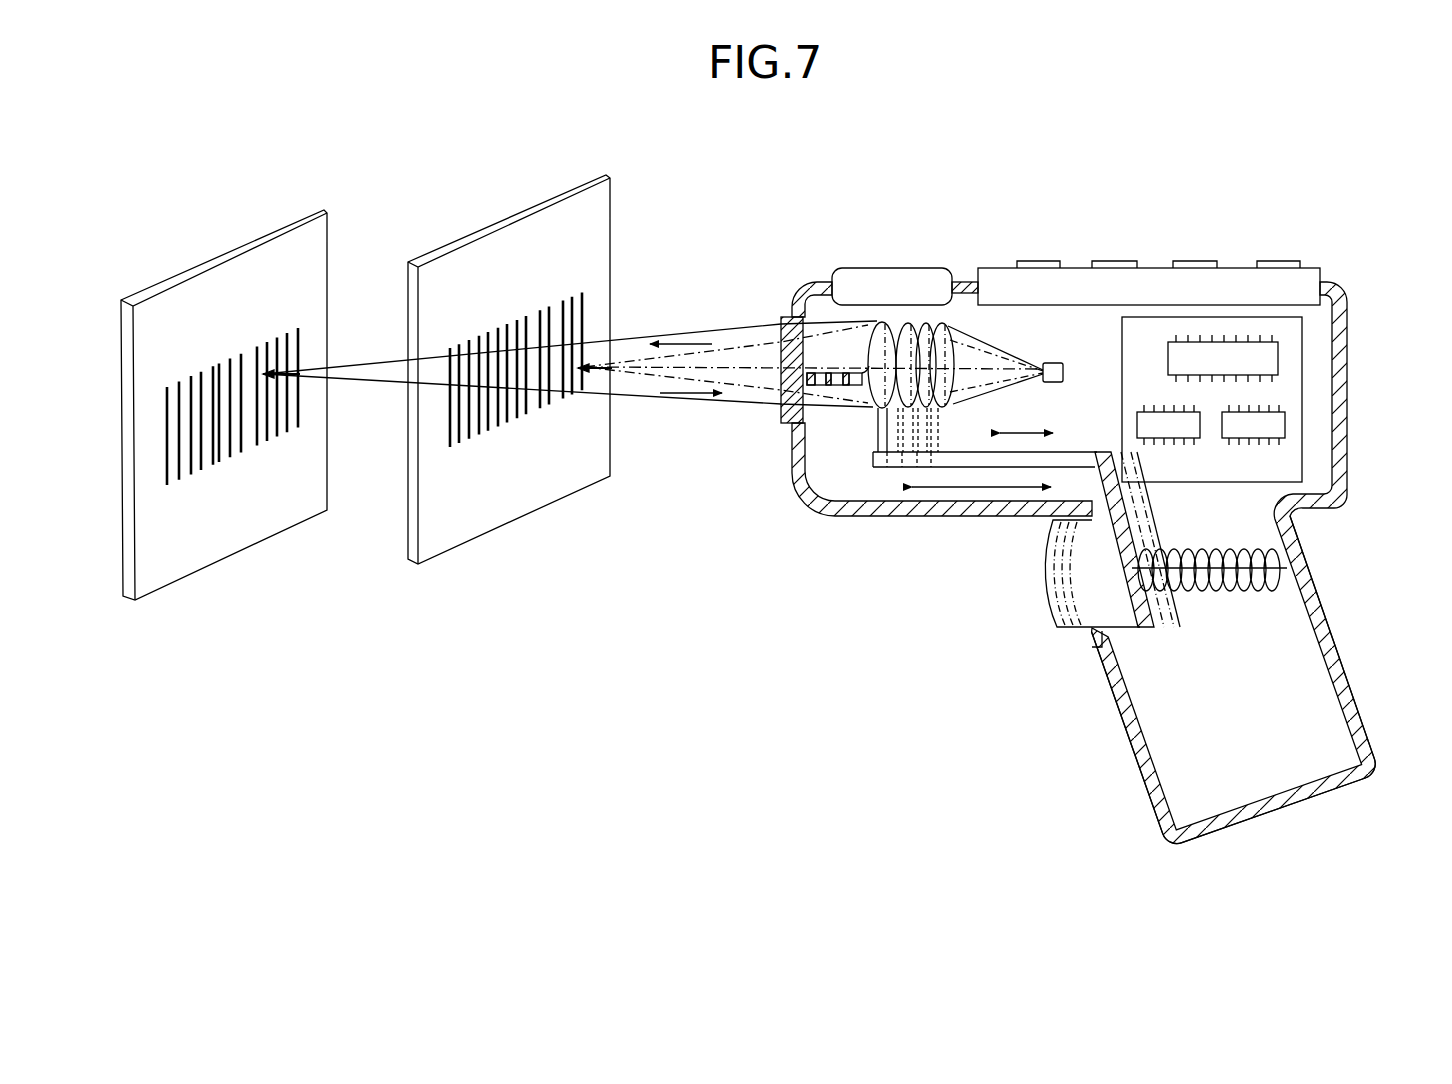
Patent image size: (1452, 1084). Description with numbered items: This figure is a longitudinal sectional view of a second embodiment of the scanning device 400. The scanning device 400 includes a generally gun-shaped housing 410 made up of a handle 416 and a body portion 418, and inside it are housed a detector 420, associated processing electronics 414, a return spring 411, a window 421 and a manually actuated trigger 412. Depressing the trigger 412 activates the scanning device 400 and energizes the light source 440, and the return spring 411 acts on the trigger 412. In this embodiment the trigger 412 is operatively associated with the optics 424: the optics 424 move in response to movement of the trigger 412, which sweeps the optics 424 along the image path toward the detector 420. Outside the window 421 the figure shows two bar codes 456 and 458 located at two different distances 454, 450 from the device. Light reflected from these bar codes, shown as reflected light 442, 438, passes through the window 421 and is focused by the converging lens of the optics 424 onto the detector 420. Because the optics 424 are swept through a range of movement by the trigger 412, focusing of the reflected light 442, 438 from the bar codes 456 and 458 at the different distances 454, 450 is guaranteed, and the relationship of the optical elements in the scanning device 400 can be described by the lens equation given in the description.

The scanning device 400 is at (960, 636).
The housing 410 is at (1354, 390).
The return spring 411 is at (1282, 538).
The trigger 412 is at (1053, 577).
The processing electronics 414 is at (1233, 343).
The handle 416 is at (1122, 713).
The body portion 418 is at (1348, 322).
The detector 420 is at (1052, 362).
The window 421 is at (781, 316).
The optics 424 is at (978, 400).
The reflected light 438 is at (648, 378).
The light source 440 is at (822, 386).
The reflected light 442 is at (632, 342).
The distance 450 is at (585, 178).
The distance 454 is at (321, 212).
The bar code 456 is at (548, 310).
The bar code 458 is at (265, 350).